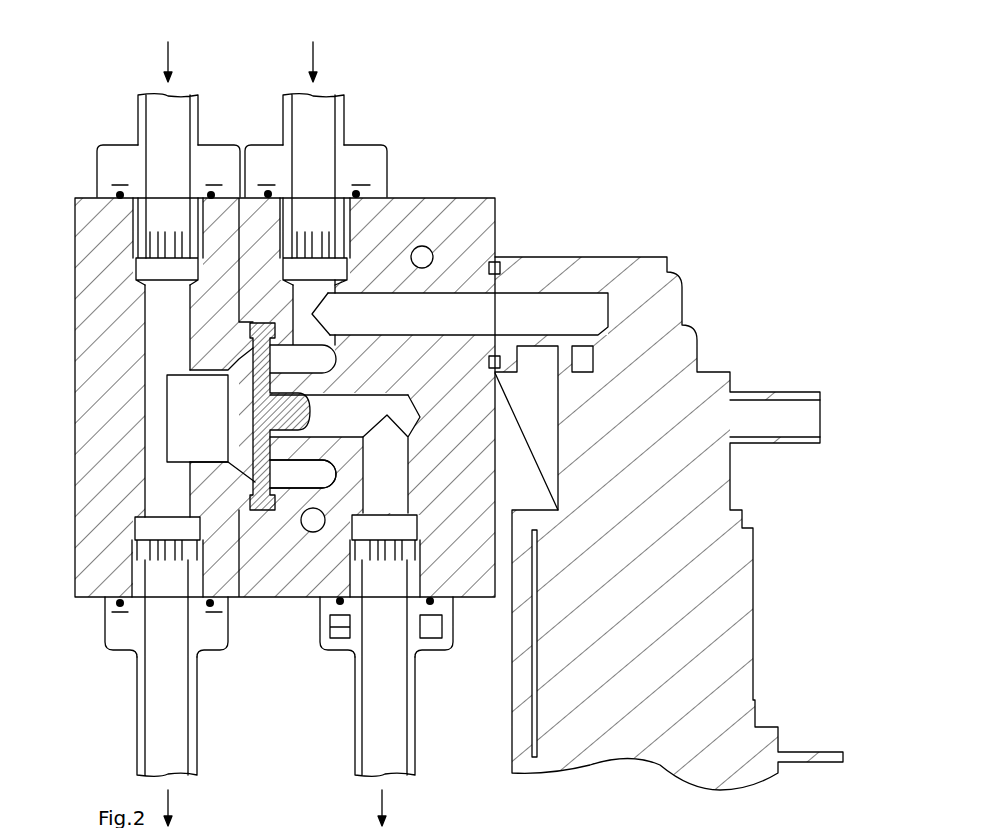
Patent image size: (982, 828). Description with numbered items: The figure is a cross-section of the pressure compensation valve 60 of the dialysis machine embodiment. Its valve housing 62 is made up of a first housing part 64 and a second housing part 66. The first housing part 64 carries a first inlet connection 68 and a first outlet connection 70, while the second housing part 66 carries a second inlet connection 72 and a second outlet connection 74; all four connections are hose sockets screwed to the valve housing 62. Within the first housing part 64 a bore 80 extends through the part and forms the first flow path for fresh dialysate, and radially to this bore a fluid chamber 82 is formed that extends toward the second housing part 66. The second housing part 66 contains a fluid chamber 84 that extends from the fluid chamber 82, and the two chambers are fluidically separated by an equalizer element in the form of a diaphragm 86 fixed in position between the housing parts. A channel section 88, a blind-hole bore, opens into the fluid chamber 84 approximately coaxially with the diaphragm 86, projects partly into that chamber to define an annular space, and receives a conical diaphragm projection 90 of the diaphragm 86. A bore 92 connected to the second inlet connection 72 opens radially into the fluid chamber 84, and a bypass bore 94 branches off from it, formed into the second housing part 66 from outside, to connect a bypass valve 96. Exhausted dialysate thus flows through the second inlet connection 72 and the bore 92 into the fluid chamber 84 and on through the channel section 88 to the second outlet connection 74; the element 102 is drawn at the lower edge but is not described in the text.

The pressure compensation valve 60 is at (676, 141).
The valve housing 62 is at (297, 355).
The first housing part 64 is at (85, 287).
The second housing part 66 is at (486, 212).
The first inlet connection 68 is at (160, 162).
The first outlet connection 70 is at (155, 688).
The second inlet connection 72 is at (358, 158).
The second outlet connection 74 is at (405, 726).
The bore 80 is at (155, 345).
The fluid chamber 82 is at (200, 458).
The fluid chamber 84 is at (295, 478).
The diaphragm 86 is at (258, 420).
The channel section 88 is at (312, 390).
The conical diaphragm projection 90 is at (298, 440).
The bore 92 is at (335, 300).
The bore 94 is at (438, 329).
The bypass valve 96 is at (650, 292).
The drive shaft 102 is at (537, 821).